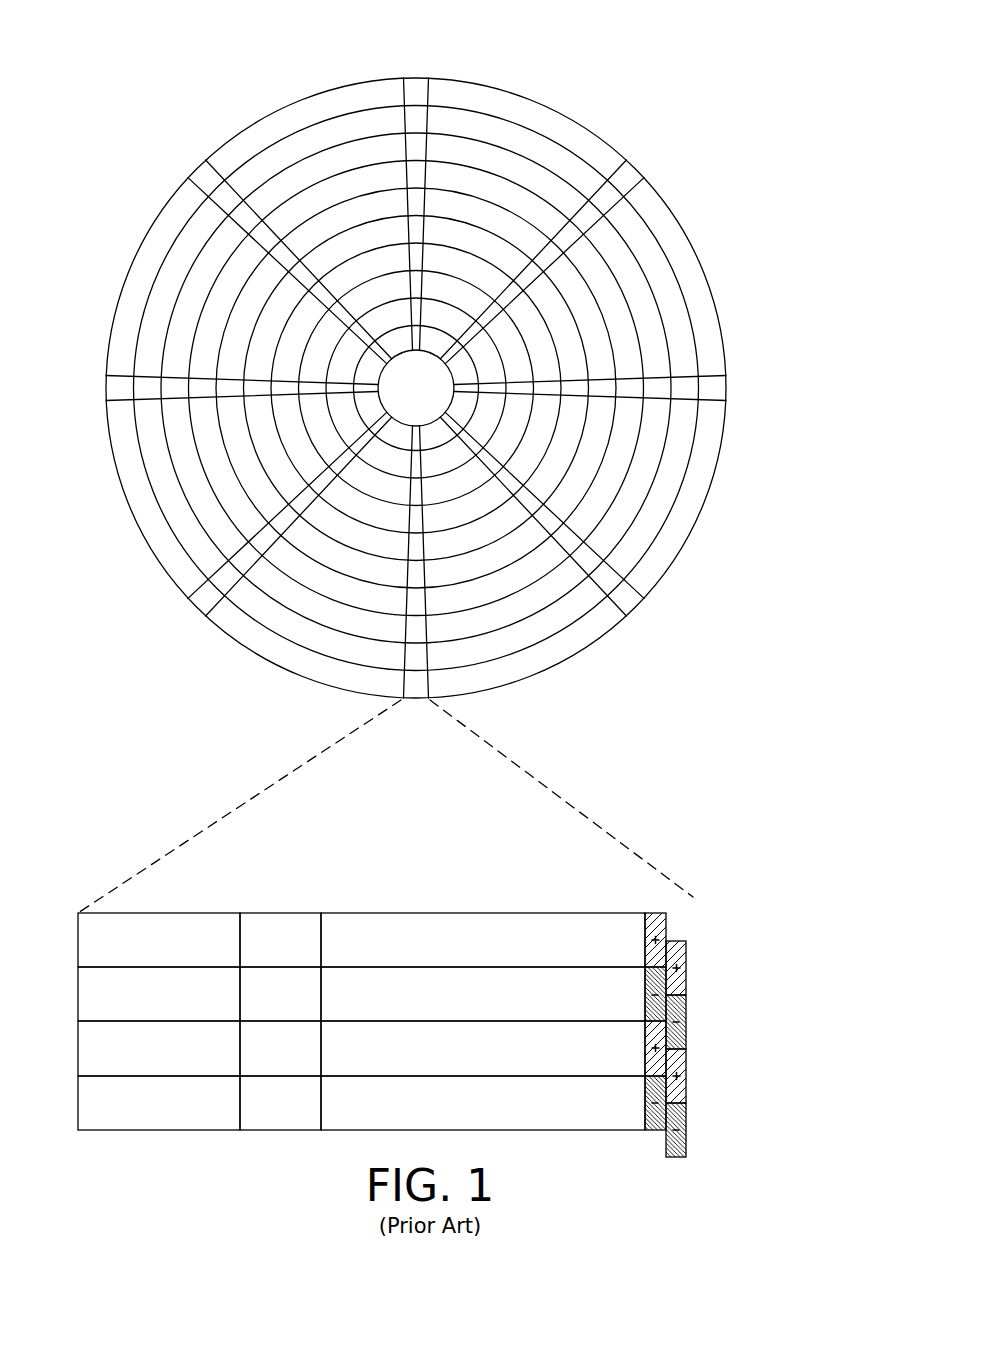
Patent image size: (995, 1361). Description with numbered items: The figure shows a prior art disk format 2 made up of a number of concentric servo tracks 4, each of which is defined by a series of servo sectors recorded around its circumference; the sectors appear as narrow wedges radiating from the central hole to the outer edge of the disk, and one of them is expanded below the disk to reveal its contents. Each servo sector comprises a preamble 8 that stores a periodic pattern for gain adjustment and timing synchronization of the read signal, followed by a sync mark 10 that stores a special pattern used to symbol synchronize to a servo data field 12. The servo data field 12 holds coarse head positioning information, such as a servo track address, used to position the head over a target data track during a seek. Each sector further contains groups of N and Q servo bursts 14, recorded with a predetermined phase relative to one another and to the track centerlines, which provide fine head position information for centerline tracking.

The disk format 2 is at (188, 83).
The servo track 4 is at (522, 142).
The preamble 8 is at (167, 912).
The sync mark 10 is at (283, 912).
The servo data field 12 is at (470, 912).
The servo bursts 14 is at (680, 912).